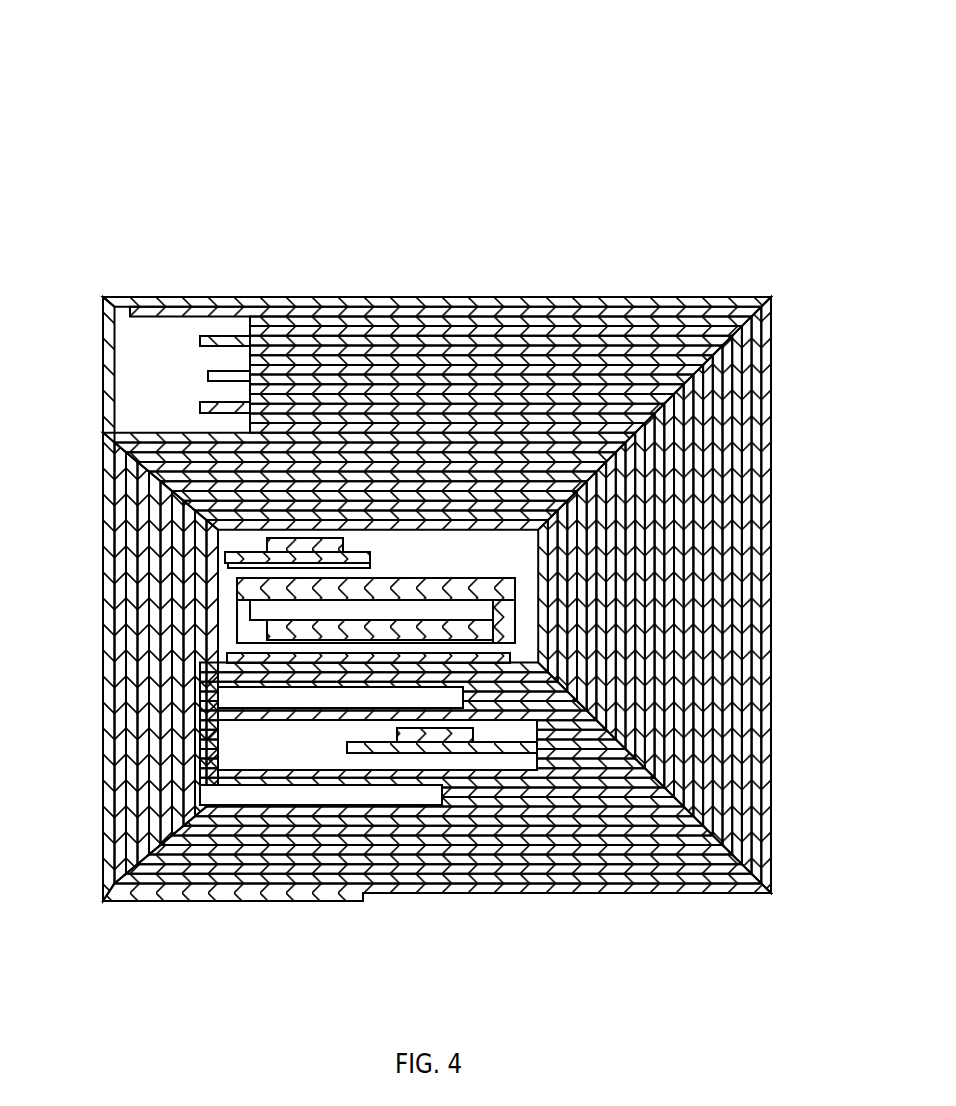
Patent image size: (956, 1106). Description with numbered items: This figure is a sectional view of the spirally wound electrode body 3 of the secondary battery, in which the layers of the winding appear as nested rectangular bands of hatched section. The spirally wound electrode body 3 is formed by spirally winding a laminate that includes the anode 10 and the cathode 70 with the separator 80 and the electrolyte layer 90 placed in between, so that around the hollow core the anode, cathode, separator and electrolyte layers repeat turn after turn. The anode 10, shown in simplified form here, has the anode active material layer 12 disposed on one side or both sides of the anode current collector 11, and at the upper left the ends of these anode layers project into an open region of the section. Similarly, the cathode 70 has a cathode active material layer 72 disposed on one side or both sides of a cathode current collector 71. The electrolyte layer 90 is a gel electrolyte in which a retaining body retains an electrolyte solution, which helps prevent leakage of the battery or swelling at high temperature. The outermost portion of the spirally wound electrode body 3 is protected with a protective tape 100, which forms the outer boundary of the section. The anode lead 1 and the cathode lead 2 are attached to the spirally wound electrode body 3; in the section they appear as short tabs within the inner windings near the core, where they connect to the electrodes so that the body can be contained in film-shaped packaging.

The spirally wound electrode body 3 is at (445, 481).
The anode 10 is at (445, 293).
The anode current collector 11 is at (184, 316).
The anode active material layer 12 is at (304, 443).
The cathode 70 is at (476, 273).
The cathode current collector 71 is at (387, 380).
The cathode active material layer 72 is at (515, 392).
The separator 80 is at (545, 412).
The electrolyte layer 90 is at (635, 422).
The protective tape 100 is at (733, 297).
The anode lead 1 is at (437, 737).
The cathode lead 2 is at (285, 547).